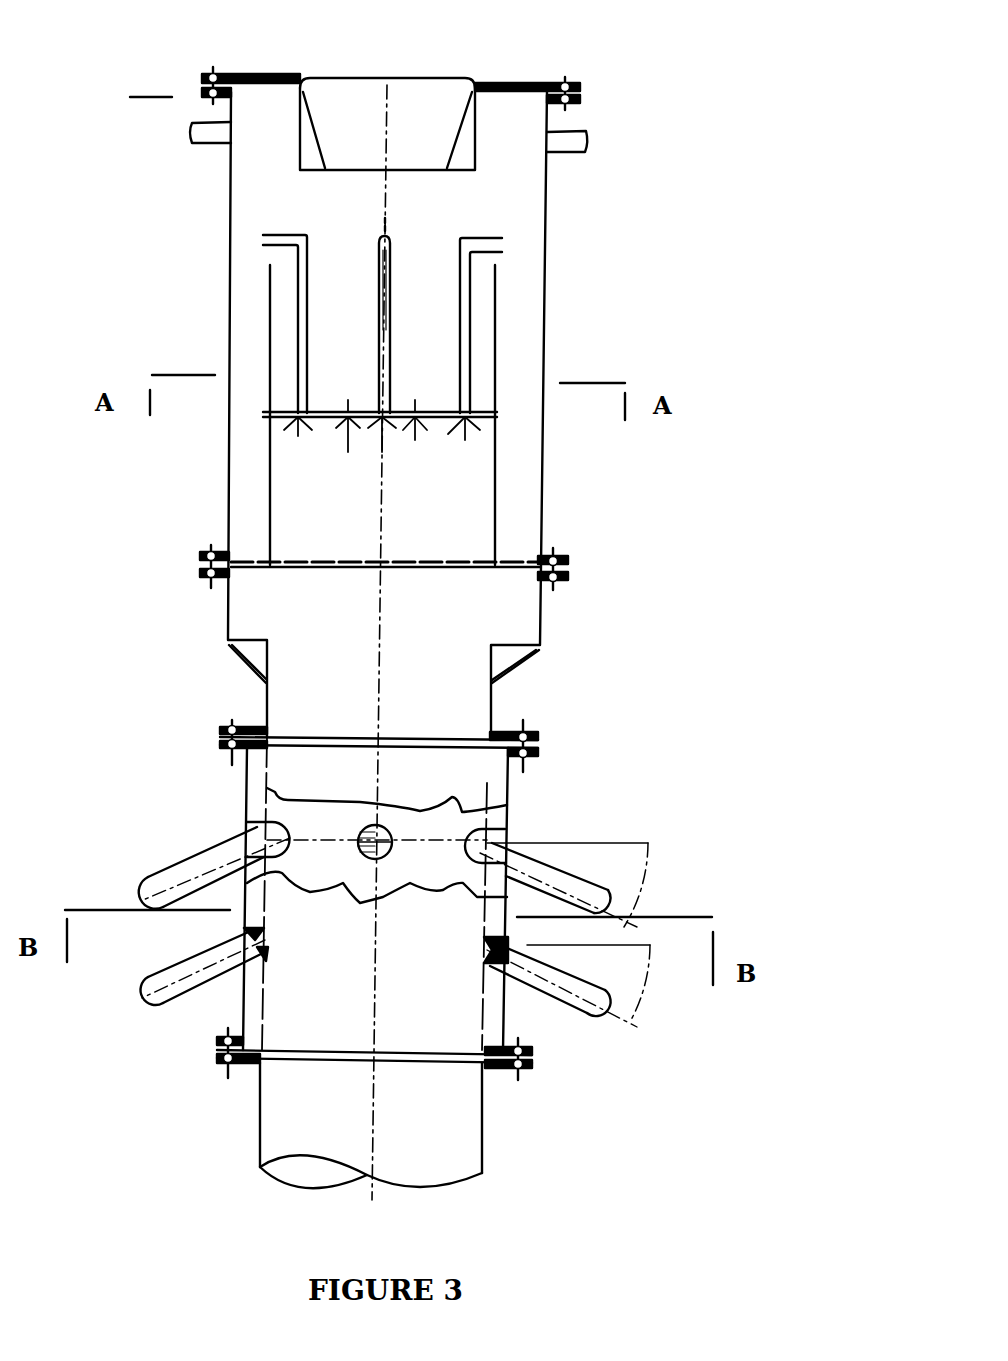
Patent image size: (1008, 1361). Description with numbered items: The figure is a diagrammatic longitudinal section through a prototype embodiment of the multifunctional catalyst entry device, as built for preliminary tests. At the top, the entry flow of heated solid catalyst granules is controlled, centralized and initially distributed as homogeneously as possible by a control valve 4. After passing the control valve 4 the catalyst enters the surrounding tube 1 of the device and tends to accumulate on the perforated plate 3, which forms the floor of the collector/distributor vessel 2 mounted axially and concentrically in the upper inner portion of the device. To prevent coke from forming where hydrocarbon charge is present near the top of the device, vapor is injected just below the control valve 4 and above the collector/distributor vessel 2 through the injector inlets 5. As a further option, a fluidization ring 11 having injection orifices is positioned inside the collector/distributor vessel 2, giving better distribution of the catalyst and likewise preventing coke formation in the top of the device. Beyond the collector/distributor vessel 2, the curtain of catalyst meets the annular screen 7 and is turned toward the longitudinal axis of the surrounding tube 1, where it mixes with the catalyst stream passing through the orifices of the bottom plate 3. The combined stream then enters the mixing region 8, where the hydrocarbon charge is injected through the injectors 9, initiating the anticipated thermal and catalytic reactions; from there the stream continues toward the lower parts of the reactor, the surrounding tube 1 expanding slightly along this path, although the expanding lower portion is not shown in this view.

The surrounding tube 1 is at (547, 207).
The collector/distributor vessel 2 is at (495, 510).
The perforated plate 3 is at (422, 584).
The control valve 4 is at (413, 88).
The injector inlets 5 is at (612, 142).
The annular screen 7 is at (495, 696).
The mixing region 8 is at (257, 892).
The injectors 9 is at (343, 922).
The fluidization ring 11 is at (507, 248).